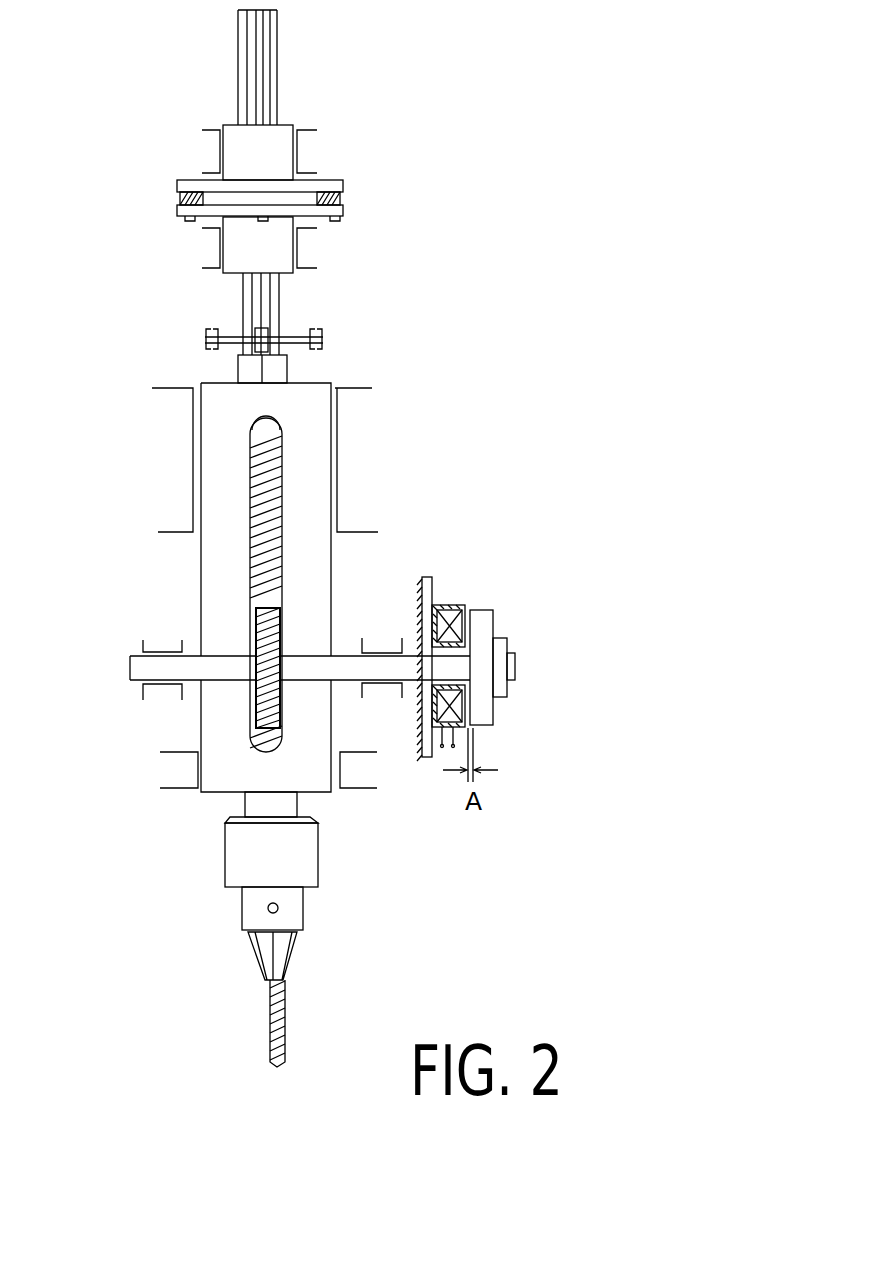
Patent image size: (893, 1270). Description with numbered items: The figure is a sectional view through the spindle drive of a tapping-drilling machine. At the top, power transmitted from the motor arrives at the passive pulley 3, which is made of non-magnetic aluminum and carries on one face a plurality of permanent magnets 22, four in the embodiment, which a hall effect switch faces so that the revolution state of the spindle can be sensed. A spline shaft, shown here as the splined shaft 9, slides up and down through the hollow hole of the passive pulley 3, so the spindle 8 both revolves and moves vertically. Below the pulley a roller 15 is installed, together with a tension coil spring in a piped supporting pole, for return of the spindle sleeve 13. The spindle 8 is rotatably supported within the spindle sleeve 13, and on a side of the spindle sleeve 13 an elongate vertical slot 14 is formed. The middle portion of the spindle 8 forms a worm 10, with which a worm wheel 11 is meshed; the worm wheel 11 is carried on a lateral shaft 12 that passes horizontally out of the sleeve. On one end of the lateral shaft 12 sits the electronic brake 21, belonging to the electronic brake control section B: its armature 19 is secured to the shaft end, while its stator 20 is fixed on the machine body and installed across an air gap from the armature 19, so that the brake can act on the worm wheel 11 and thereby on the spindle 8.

The drive shaft 9 is at (268, 70).
The passive pulley 3 is at (337, 180).
The permanent magnets 22 is at (340, 218).
The roller 15 is at (267, 331).
The spindle 8 is at (287, 370).
The elongate vertical slot 14 is at (263, 423).
The worm 10 is at (263, 472).
The spindle sleeve 13 is at (217, 562).
The worm wheel 11 is at (265, 638).
The lateral shaft 12 is at (143, 673).
The electronic brake 21 is at (529, 494).
The electronic brake control section B is at (566, 492).
The stator 20 is at (448, 606).
The armature 19 is at (483, 610).